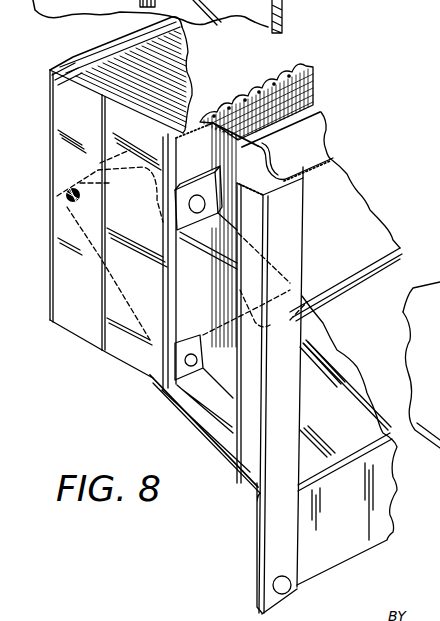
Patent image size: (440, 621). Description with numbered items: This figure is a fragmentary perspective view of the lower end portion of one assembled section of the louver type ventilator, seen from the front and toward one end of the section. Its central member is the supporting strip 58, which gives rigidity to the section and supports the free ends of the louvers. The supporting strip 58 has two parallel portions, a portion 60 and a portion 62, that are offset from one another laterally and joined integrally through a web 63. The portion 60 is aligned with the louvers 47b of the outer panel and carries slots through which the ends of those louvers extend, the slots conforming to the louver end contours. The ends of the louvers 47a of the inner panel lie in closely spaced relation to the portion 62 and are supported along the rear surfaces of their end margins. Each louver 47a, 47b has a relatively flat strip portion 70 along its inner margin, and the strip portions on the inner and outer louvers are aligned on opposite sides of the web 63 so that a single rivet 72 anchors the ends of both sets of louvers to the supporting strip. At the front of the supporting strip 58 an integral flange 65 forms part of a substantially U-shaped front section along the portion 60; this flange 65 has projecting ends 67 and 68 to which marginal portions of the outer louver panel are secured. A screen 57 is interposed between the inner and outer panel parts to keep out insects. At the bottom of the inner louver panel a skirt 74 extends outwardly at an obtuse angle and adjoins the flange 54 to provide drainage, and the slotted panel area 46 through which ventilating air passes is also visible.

The panel 46 is at (421, 365).
The louvers on the inner panel part 47a is at (137, 62).
The louvers on the outer panel part 47b is at (372, 215).
The flange 54 is at (380, 522).
The screen 57 is at (312, 95).
The supporting strip 58 is at (240, 28).
The portion of the supporting strip 60 is at (276, 97).
The portion of the supporting strip 62 is at (132, 358).
The web 63 is at (198, 117).
The flange 65 is at (293, 256).
The projecting end of flange 67 is at (55, 257).
The projecting end of flange 68 is at (275, 565).
The flat strip portion 70 is at (317, 137).
The rivet 72 is at (189, 203).
The skirt 74 is at (338, 392).